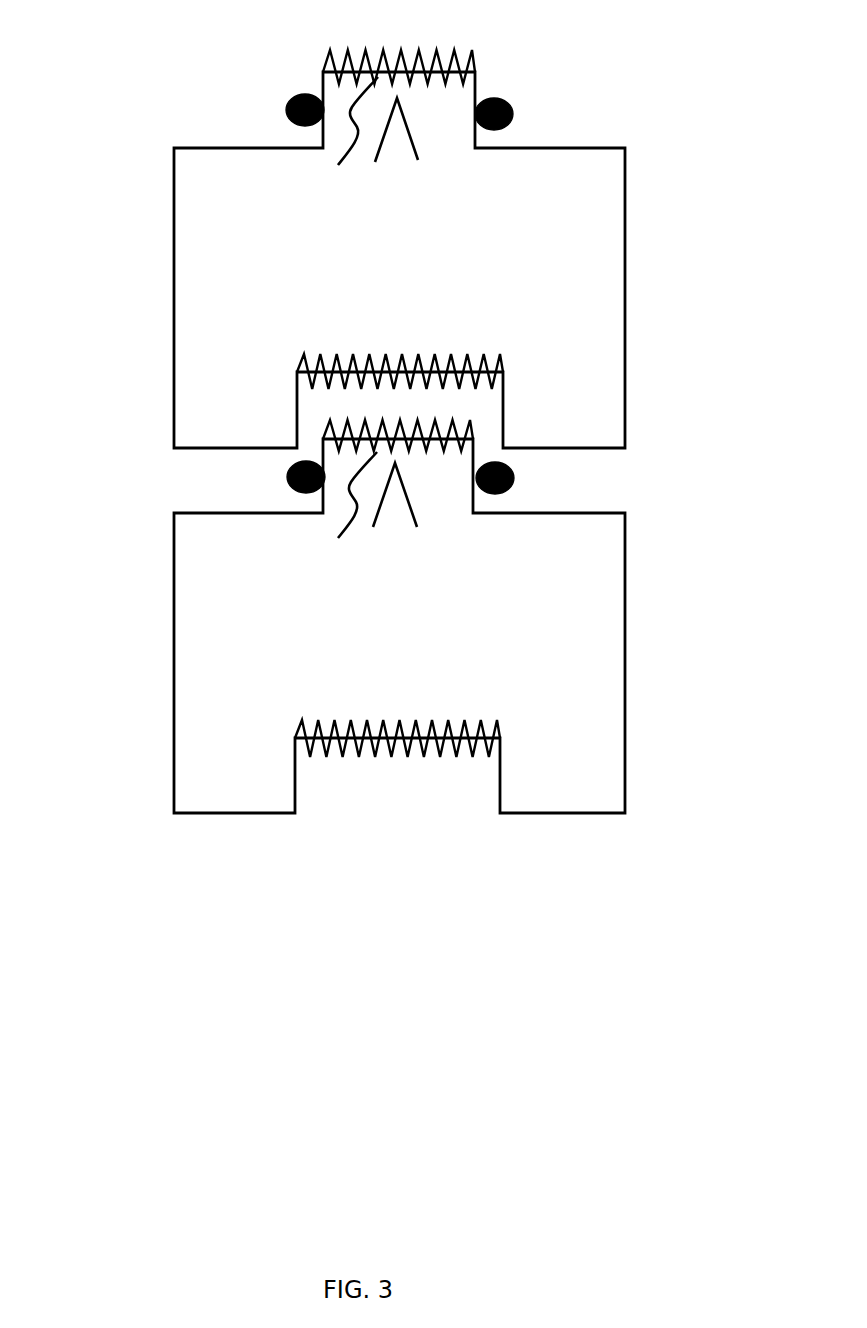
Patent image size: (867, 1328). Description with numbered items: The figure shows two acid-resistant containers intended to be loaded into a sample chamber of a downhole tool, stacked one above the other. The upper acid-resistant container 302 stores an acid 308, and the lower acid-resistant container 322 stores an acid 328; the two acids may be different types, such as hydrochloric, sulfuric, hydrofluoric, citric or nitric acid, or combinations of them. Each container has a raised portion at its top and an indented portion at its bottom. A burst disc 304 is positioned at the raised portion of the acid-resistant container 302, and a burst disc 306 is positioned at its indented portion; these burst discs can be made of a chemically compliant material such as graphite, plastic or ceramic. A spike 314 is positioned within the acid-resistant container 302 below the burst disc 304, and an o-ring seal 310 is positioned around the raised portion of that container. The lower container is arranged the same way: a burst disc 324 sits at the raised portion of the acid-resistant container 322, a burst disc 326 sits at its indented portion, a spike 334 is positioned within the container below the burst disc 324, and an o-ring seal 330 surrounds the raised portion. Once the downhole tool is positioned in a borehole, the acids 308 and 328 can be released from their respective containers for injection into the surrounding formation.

The acid-resistant container 302 is at (174, 222).
The burst disc 304 is at (339, 147).
The burst disc 306 is at (337, 355).
The acid 308 is at (446, 270).
The o-ring seal 310 is at (290, 101).
The spike 314 is at (413, 140).
The acid-resistant container 322 is at (174, 635).
The burst disc 324 is at (338, 520).
The burst disc 326 is at (337, 720).
The acid 328 is at (446, 636).
The o-ring seal 330 is at (288, 478).
The spike 334 is at (410, 508).